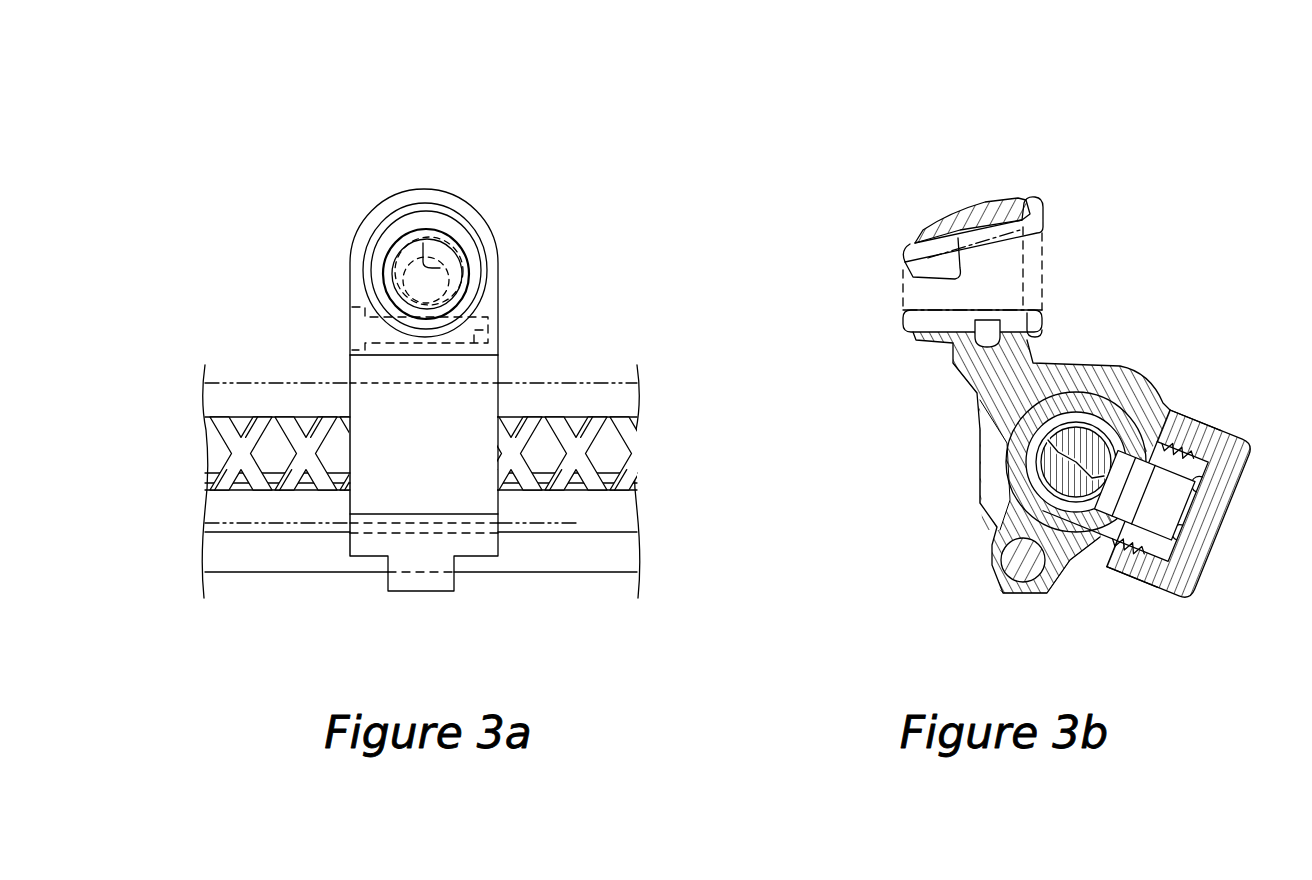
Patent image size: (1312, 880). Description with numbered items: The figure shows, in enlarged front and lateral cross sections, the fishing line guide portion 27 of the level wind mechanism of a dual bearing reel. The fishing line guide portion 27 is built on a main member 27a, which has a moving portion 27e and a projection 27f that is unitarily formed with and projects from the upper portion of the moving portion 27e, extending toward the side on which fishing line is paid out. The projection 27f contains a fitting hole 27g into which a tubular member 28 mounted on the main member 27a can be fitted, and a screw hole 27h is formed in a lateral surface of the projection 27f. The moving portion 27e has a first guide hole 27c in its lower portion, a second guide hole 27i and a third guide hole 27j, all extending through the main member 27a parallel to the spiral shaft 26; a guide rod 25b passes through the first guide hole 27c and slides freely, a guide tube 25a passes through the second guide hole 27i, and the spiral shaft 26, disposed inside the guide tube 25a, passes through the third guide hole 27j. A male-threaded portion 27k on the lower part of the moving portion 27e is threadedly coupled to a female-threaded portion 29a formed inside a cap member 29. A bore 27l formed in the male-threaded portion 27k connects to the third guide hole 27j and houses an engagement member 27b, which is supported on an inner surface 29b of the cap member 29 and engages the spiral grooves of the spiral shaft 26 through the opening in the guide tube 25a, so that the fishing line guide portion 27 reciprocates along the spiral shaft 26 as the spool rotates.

In FIG. 3A, the guide tube 25a is at (565, 525).
In FIG. 3B, the guide tube 25a is at (1085, 395).
In FIG. 3A, the guide rod 25b is at (558, 553).
In FIG. 3B, the guide rod 25b is at (1003, 550).
In FIG. 3A, the spiral shaft 26 is at (288, 463).
In FIG. 3B, the spiral shaft 26 is at (1067, 463).
In FIG. 3A, the fishing line guide portion 27 is at (267, 178).
In FIG. 3B, the fishing line guide portion 27 is at (823, 183).
In FIG. 3A, the main member 27a is at (333, 305).
In FIG. 3B, the main member 27a is at (943, 490).
In FIG. 3B, the engagement member 27b is at (1107, 535).
In FIG. 3B, the first guide hole 27c is at (1000, 593).
In FIG. 3A, the moving portion 27e is at (362, 373).
In FIG. 3B, the moving portion 27e is at (992, 454).
In FIG. 3A, the projection 27f is at (448, 208).
In FIG. 3B, the projection 27f is at (962, 215).
In FIG. 3A, the fitting hole 27g is at (440, 268).
In FIG. 3B, the fitting hole 27g is at (945, 272).
In FIG. 3A, the screw hole 27h is at (491, 323).
In FIG. 3B, the screw hole 27h is at (987, 318).
In FIG. 3B, the second guide hole 27i is at (1090, 360).
In FIG. 3B, the third guide hole 27j is at (1130, 410).
In FIG. 3B, the male-threaded portion 27k is at (1200, 430).
In FIG. 3B, the bore 27l is at (1205, 478).
In FIG. 3A, the tubular member 28 is at (467, 273).
In FIG. 3B, the tubular member 28 is at (1040, 247).
In FIG. 3B, the cap member 29 is at (1187, 590).
In FIG. 3B, the female-threaded portion 29a is at (1150, 597).
In FIG. 3B, the inner surface 29b is at (1215, 560).